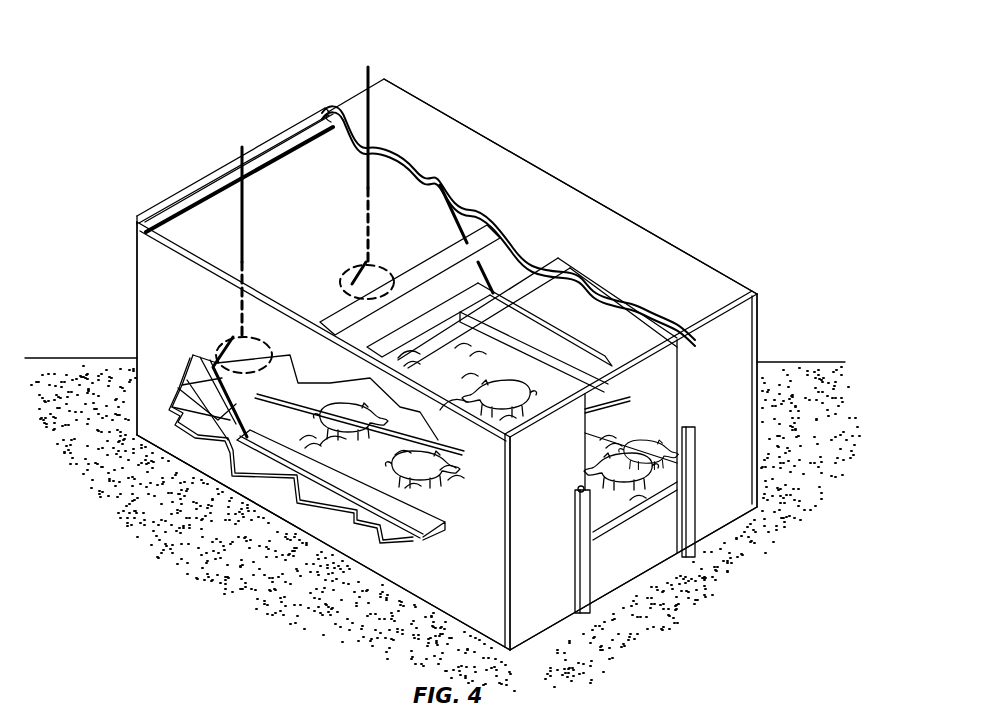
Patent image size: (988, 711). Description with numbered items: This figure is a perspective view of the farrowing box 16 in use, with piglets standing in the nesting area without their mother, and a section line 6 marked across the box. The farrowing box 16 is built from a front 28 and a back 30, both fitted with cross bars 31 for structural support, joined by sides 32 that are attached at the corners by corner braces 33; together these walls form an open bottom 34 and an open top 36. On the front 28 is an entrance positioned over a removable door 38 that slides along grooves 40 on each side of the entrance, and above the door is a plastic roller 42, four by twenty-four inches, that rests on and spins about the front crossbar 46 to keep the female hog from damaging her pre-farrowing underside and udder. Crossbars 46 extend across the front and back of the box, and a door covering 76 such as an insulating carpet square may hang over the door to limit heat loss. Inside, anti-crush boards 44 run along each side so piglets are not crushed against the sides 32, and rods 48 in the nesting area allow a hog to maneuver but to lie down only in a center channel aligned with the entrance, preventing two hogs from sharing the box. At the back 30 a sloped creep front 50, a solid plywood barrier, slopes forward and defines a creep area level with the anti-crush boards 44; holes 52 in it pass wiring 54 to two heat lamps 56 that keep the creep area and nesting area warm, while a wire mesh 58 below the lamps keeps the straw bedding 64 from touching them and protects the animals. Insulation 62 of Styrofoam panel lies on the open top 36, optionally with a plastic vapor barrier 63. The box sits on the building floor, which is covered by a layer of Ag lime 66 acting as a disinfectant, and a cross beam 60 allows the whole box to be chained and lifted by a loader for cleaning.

The section line 6- 6 is at (190, 80).
The farrowing box 16 is at (145, 120).
The front 28 is at (540, 622).
The back 30 is at (193, 195).
The cross bars 31 is at (316, 120).
The sides 32 is at (410, 585).
The corner braces 33 is at (146, 225).
The open bottom 34 is at (310, 545).
The open top 36 is at (452, 374).
The removable door 38 is at (660, 564).
The grooves 40 is at (594, 590).
The plastic roller 42 is at (578, 512).
The anti-crush boards 44 is at (317, 463).
The crossbars 46 is at (190, 468).
The rods 48 is at (402, 432).
The sloped creep front 50 is at (335, 217).
The holes 52 is at (243, 258).
The wiring 54 is at (234, 146).
The heat lamps 56 is at (222, 352).
The wire mesh 58 is at (197, 425).
The cross beam 60 is at (345, 318).
The insulation 62 is at (490, 145).
The plastic vapor barrier 63 is at (606, 296).
The straw bedding 64 is at (493, 352).
The Ag lime layer 66 is at (805, 522).
The door covering 76 is at (430, 443).